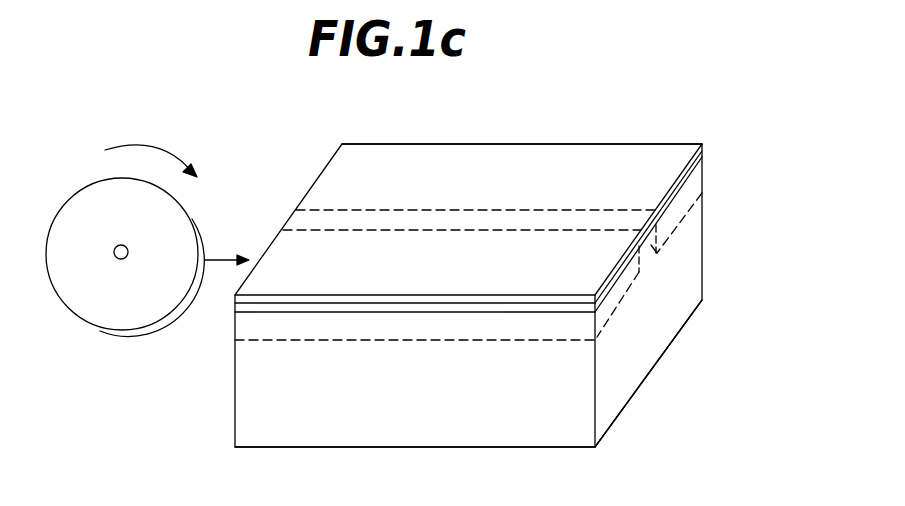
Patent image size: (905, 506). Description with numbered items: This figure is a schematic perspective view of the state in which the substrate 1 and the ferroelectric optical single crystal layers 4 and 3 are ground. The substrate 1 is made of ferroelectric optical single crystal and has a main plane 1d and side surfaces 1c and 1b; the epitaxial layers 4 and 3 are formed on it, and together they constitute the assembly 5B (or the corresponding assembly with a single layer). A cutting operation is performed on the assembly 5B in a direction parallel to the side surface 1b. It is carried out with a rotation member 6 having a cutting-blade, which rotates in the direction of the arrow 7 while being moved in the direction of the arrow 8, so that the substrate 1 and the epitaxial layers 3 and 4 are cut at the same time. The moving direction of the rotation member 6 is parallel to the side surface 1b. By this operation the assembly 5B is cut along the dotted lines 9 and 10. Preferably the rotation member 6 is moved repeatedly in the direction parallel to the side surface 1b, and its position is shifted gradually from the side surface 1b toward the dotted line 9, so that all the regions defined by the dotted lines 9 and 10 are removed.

The substrate 1 is at (714, 226).
The side surface 1b is at (502, 422).
The side surface 1c is at (670, 313).
The main plane 1d is at (570, 447).
The ferroelectric optical single crystal layer 3 is at (553, 162).
The ferroelectric optical single crystal layer 4 is at (419, 309).
The assembly 5B is at (713, 140).
The rotation member 6 is at (97, 208).
The arrow 7 is at (175, 153).
The arrow 8 is at (220, 258).
The dotted line 9 is at (442, 230).
The dotted line 10 is at (672, 230).